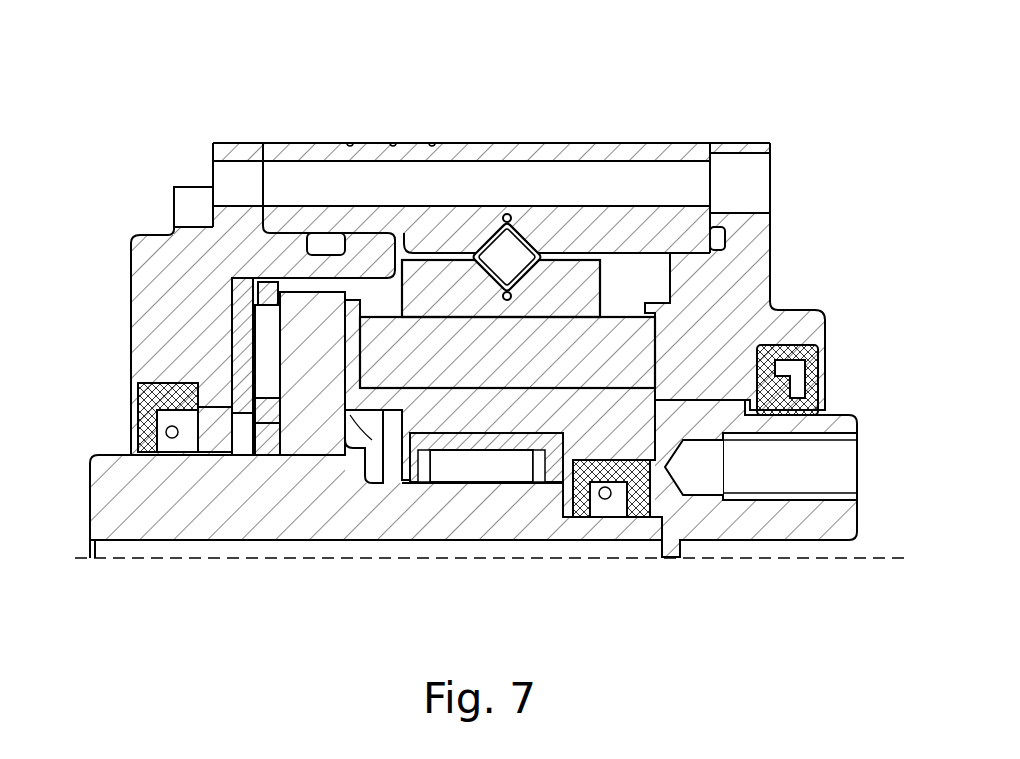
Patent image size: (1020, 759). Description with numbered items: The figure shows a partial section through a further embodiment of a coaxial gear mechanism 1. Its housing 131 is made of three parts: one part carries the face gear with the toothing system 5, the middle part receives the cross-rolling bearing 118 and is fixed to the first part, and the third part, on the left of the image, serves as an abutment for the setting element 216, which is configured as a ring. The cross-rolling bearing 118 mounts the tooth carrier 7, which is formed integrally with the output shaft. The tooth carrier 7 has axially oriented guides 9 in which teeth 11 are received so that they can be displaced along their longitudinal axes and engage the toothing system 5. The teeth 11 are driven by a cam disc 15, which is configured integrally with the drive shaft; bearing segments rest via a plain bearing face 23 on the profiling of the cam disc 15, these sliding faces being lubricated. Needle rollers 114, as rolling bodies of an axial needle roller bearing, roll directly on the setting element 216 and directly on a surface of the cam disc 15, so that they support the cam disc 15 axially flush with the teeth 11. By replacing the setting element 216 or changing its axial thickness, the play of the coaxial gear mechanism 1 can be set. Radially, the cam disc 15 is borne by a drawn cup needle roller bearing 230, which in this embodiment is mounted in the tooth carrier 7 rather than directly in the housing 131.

The coaxial gear mechanism 1 is at (147, 132).
The housing 131 is at (252, 143).
The cross-rolling bearing 118 is at (496, 220).
The guides 9 is at (553, 317).
The teeth 11 is at (603, 312).
The toothing system 5 is at (657, 362).
The setting element 216 is at (233, 278).
The needle rollers 114 is at (250, 337).
The cam disc 15 is at (260, 542).
The plain bearing face 23 is at (383, 413).
The drawn cup needle roller bearing 230 is at (537, 482).
The tooth carrier 7 is at (757, 542).